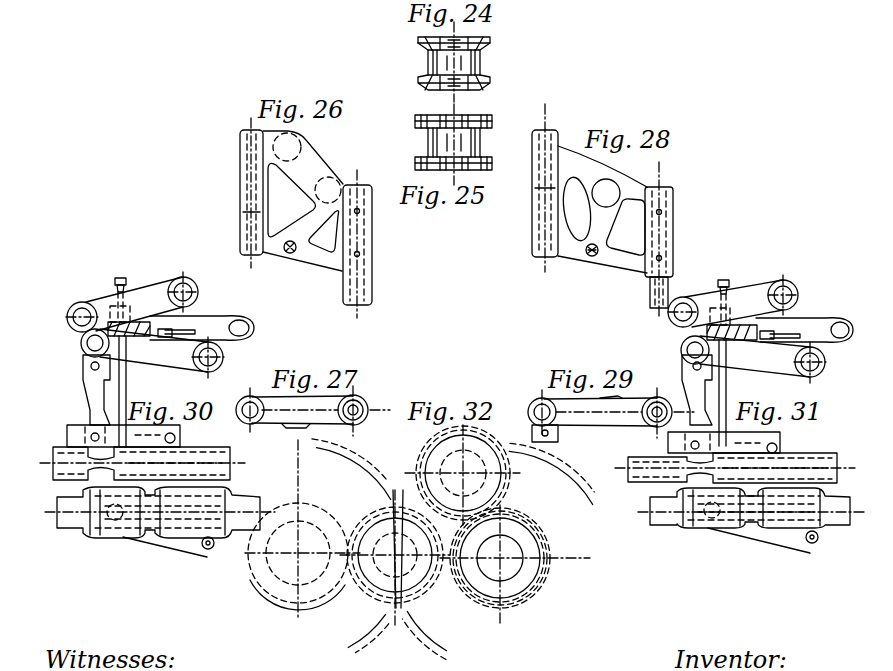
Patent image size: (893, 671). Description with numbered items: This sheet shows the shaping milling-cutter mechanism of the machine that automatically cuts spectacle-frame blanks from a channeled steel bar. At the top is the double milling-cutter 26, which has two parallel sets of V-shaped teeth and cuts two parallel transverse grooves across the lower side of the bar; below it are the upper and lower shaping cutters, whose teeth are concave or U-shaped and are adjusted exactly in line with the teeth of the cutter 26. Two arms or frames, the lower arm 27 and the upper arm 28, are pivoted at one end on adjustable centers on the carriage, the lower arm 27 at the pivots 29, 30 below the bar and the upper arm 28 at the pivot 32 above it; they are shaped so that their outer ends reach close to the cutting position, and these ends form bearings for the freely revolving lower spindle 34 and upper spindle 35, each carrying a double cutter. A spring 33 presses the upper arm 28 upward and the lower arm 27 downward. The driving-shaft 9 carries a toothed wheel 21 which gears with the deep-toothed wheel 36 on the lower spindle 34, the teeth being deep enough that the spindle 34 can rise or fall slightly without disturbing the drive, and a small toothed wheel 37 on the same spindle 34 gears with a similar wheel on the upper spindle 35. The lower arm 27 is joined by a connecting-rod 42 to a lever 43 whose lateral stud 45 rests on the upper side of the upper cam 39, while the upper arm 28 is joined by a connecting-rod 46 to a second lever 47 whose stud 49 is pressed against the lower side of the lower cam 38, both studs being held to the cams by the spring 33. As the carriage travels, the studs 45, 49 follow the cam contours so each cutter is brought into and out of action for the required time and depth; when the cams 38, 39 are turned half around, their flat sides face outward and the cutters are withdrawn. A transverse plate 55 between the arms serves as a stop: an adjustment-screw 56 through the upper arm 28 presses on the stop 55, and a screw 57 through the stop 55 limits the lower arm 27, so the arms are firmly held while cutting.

In FIG. 32, the driving-shaft 9 is at (318, 546).
In FIG. 32, the toothed wheel 21 is at (382, 608).
In FIG. 24, the double milling-cutter 26 is at (483, 41).
In FIG. 32, the double milling-cutter 26 is at (366, 518).
In FIG. 28, the lower pivoted arm 27 is at (602, 216).
In FIG. 29, the lower pivoted arm 27 is at (611, 413).
In FIG. 30, the lower pivoted arm 27 is at (152, 353).
In FIG. 31, the lower pivoted arm 27 is at (753, 359).
In FIG. 26, the upper pivoted arm 28 is at (303, 206).
In FIG. 27, the upper pivoted arm 28 is at (313, 411).
In FIG. 30, the upper pivoted arm 28 is at (132, 302).
In FIG. 31, the upper pivoted arm 28 is at (733, 301).
In FIG. 28, the pivot of lower arm 29 is at (652, 305).
In FIG. 29, the pivot of lower arm 29 is at (655, 428).
In FIG. 28, the pivot of lower arm 30 is at (602, 211).
In FIG. 26, the pivot of upper arm 32 is at (302, 193).
In FIG. 30, the spring 33 is at (212, 315).
In FIG. 31, the spring 33 is at (818, 312).
In FIG. 26, the lower spindle 34 is at (357, 248).
In FIG. 32, the lower spindle 34 is at (496, 568).
In FIG. 32, the upper spindle 35 is at (462, 488).
In FIG. 32, the toothed wheel 36 is at (414, 617).
In FIG. 32, the small toothed wheel 37 is at (546, 572).
In FIG. 30, the lower cam 38 is at (100, 540).
In FIG. 31, the lower cam 38 is at (665, 530).
In FIG. 30, the upper cam 39 is at (215, 447).
In FIG. 31, the upper cam 39 is at (820, 453).
In FIG. 30, the connecting-rod 42 is at (90, 393).
In FIG. 31, the connecting-rod 42 is at (690, 393).
In FIG. 30, the lever 43 is at (123, 436).
In FIG. 31, the lever 43 is at (724, 442).
In FIG. 30, the lateral stud 45 is at (175, 437).
In FIG. 31, the lateral stud 45 is at (777, 446).
In FIG. 30, the connecting-rod 46 is at (126, 380).
In FIG. 31, the connecting-rod 46 is at (726, 375).
In FIG. 30, the second lever 47 is at (160, 547).
In FIG. 31, the second lever 47 is at (765, 540).
In FIG. 30, the lateral stud 49 is at (210, 549).
In FIG. 31, the lateral stud 49 is at (814, 543).
In FIG. 30, the transverse plate 55 is at (129, 333).
In FIG. 31, the transverse plate 55 is at (732, 335).
In FIG. 26, the adjustment-screw 56 is at (287, 243).
In FIG. 30, the adjustment-screw 56 is at (122, 291).
In FIG. 31, the adjustment-screw 56 is at (725, 293).
In FIG. 28, the screw 57 is at (598, 248).
In FIG. 30, the screw 57 is at (172, 333).
In FIG. 31, the screw 57 is at (760, 334).